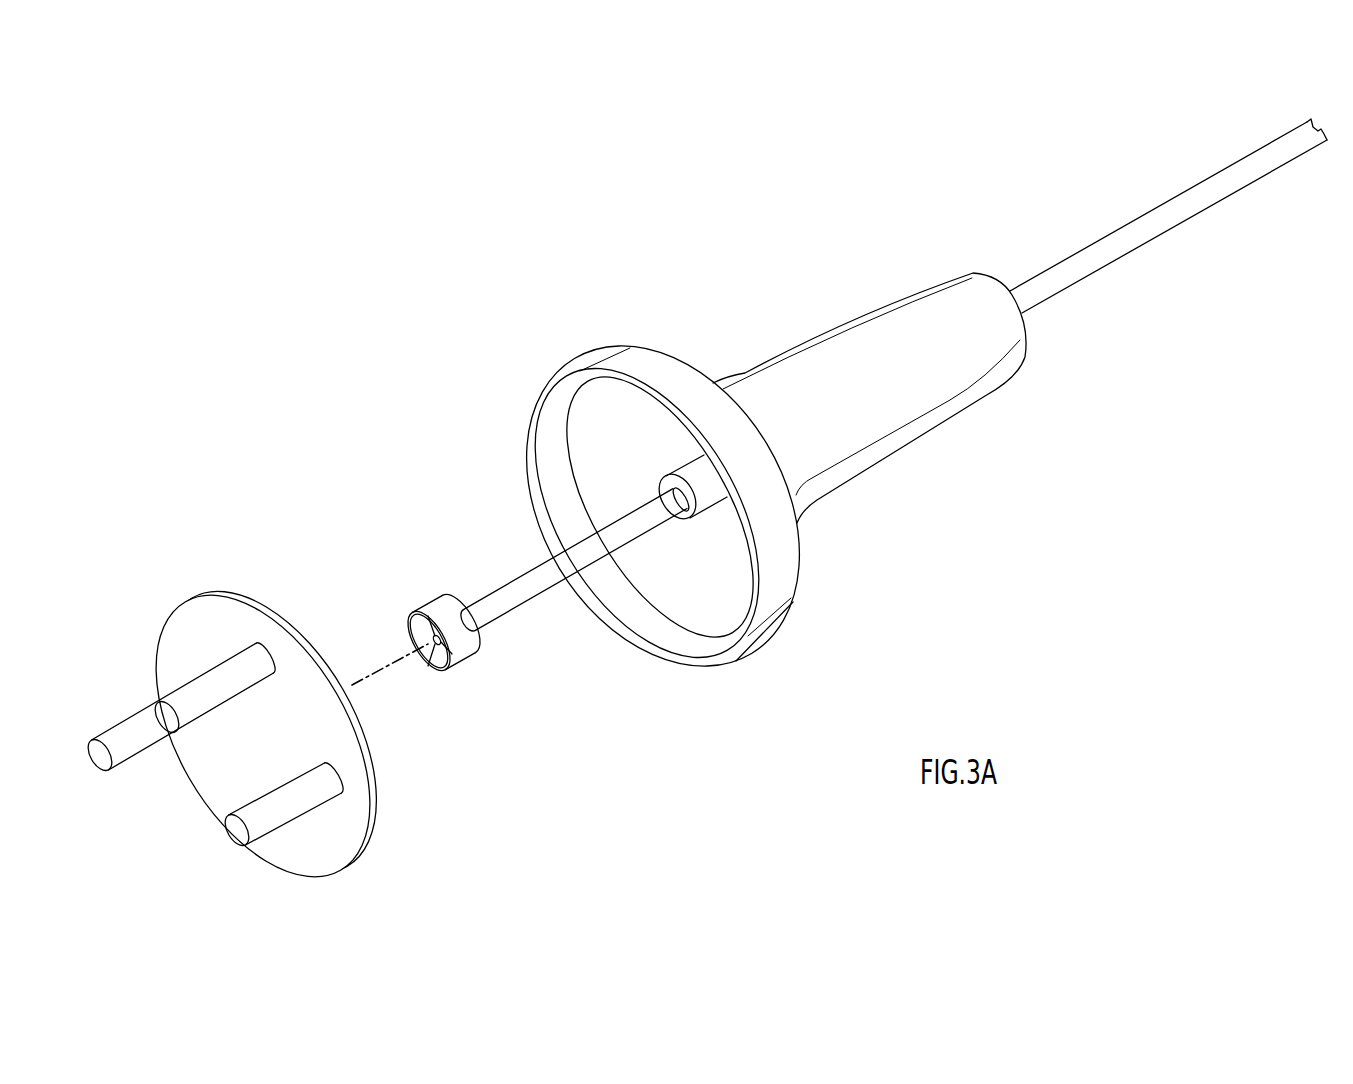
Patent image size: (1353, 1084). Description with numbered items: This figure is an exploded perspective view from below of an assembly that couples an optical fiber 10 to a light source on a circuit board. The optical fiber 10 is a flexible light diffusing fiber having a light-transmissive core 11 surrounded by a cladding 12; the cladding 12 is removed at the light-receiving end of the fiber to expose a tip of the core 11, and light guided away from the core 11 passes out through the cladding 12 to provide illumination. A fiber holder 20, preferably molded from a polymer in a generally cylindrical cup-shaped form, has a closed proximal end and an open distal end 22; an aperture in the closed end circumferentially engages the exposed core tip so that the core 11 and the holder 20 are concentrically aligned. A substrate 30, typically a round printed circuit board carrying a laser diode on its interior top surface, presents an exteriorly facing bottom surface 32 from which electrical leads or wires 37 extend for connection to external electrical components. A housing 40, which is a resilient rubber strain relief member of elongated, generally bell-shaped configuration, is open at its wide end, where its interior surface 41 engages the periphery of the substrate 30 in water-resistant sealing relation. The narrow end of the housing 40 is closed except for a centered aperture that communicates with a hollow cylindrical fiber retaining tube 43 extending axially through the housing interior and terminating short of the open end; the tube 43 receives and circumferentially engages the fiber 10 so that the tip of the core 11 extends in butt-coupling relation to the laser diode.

The optical fiber 10 is at (1267, 133).
The light-transmissive core 11 is at (440, 648).
The cladding 12 is at (503, 618).
The fiber holder 20 is at (416, 637).
The open distal end 22 is at (410, 628).
The substrate 30 is at (266, 746).
The bottom surface 32 is at (269, 758).
The electrical leads or wires 37 is at (212, 680).
The housing 40 is at (980, 398).
The interior surface 41 is at (551, 447).
The fiber retaining tube 43 is at (707, 502).